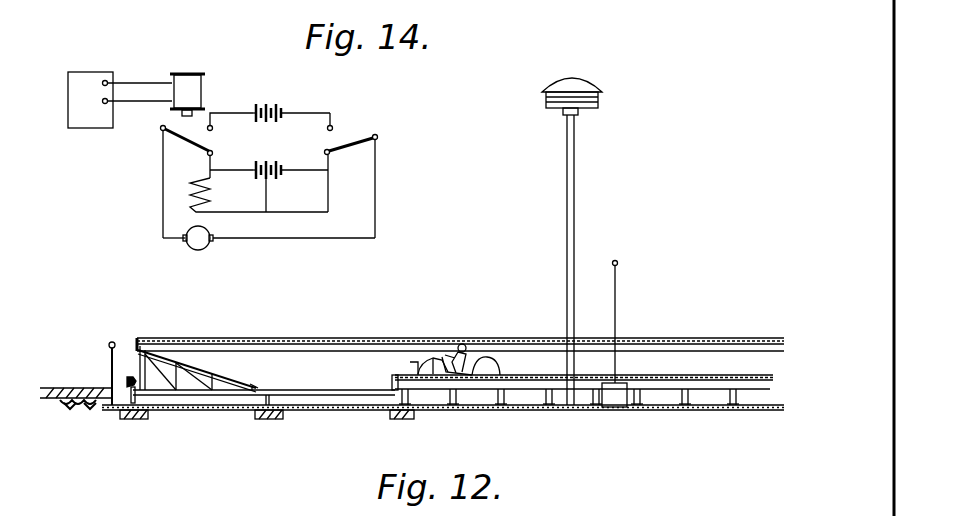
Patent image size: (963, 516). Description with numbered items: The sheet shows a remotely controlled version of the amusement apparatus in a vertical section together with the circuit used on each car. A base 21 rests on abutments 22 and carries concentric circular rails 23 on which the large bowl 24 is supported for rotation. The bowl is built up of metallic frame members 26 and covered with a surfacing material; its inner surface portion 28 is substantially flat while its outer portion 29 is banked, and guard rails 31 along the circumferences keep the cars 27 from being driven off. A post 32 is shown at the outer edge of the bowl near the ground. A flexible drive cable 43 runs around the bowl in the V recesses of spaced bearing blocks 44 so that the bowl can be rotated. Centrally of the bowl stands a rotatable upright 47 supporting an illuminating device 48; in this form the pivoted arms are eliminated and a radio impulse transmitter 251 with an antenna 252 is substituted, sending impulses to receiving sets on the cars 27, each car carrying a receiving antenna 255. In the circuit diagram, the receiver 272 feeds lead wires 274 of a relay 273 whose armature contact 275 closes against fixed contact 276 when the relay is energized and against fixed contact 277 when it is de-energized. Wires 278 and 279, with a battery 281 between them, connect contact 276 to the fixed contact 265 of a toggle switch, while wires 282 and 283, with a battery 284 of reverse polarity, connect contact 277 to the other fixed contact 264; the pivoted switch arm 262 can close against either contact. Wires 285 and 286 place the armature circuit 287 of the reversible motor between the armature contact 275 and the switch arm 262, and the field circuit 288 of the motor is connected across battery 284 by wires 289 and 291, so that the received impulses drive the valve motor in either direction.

In FIG. 14, the receiver 272 is at (83, 87).
In FIG. 14, the lead wires 274 is at (139, 100).
In FIG. 14, the relay 273 is at (190, 86).
In FIG. 14, the wire 278 is at (227, 113).
In FIG. 14, the battery 281 is at (277, 106).
In FIG. 14, the wire 279 is at (311, 113).
In FIG. 14, the fixed contact 265 is at (333, 126).
In FIG. 14, the switch arm 262 is at (355, 141).
In FIG. 14, the fixed contact 264 is at (331, 153).
In FIG. 14, the wire 291 is at (330, 182).
In FIG. 14, the armature contact 275 is at (181, 139).
In FIG. 14, the fixed contact 276 is at (266, 121).
In FIG. 14, the fixed contact 277 is at (216, 157).
In FIG. 14, the wire 285 is at (163, 173).
In FIG. 14, the wire 289 is at (207, 161).
In FIG. 14, the field circuit 288 is at (190, 199).
In FIG. 14, the wire 282 is at (235, 170).
In FIG. 14, the wire 283 is at (302, 170).
In FIG. 14, the battery 284 is at (266, 212).
In FIG. 14, the armature circuit 287 is at (199, 247).
In FIG. 14, the wire 286 is at (332, 240).
In FIG. 12, the illuminating device 48 is at (588, 88).
In FIG. 12, the upright 47 is at (574, 176).
In FIG. 12, the antenna 252 is at (617, 298).
In FIG. 12, the radio impulse transmitter 251 is at (616, 398).
In FIG. 12, the guard rails 31 is at (142, 345).
In FIG. 12, the frame members 26 is at (168, 358).
In FIG. 12, the banked surface portion 29 is at (194, 368).
In FIG. 12, the bowl 24 is at (255, 385).
In FIG. 12, the flat surface portion 28 is at (308, 389).
In FIG. 12, the receiving antenna 255 is at (412, 369).
In FIG. 12, the car 27 is at (480, 365).
In FIG. 12, the post 32 is at (128, 384).
In FIG. 12, the flexible drive cable 43 is at (131, 388).
In FIG. 12, the bearing blocks 44 is at (130, 394).
In FIG. 12, the circular rails 23 is at (118, 407).
In FIG. 12, the abutments 22 is at (254, 412).
In FIG. 12, the base 21 is at (347, 411).